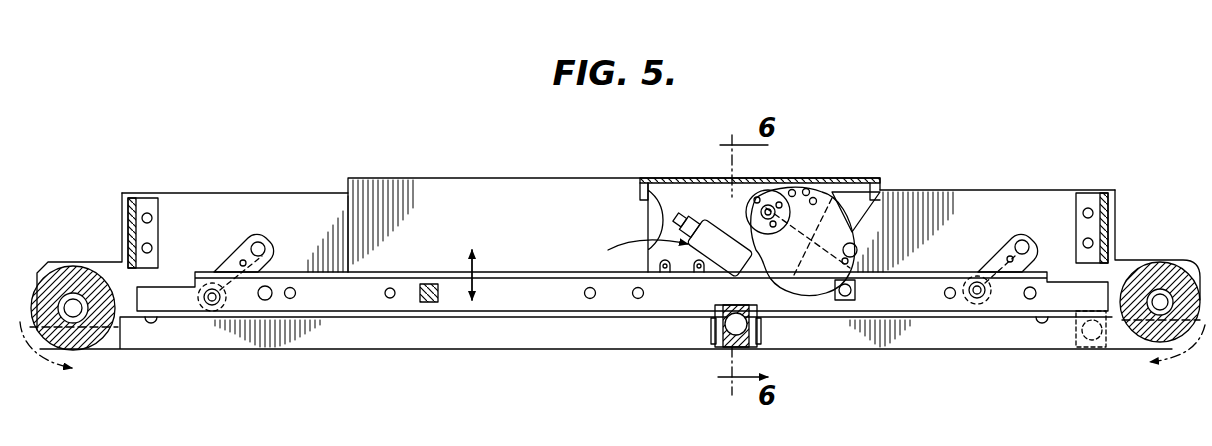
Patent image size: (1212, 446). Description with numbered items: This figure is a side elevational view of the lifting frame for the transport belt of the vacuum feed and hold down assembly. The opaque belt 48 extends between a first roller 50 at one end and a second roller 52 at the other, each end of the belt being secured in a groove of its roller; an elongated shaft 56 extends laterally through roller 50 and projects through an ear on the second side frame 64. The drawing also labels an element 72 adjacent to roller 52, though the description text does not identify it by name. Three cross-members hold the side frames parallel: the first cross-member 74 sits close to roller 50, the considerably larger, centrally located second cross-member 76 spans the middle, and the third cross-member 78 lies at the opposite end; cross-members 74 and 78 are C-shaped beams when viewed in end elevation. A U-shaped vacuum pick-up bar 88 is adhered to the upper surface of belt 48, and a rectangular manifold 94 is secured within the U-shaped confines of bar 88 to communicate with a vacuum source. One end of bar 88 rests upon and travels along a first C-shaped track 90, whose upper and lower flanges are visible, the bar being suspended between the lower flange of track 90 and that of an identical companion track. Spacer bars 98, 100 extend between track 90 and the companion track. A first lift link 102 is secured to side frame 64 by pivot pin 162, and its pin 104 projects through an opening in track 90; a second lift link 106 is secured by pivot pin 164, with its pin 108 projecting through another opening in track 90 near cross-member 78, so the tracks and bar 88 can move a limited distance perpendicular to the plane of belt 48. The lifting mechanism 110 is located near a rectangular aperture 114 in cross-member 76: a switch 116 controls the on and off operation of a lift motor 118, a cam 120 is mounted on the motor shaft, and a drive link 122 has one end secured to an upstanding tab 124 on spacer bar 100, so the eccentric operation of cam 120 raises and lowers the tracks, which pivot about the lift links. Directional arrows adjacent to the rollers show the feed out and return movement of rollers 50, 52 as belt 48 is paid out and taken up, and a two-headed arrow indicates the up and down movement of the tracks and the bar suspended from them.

The belt 48 is at (376, 345).
The first roller 50 is at (1163, 272).
The second roller 52 is at (88, 336).
The elongated shaft 56 is at (1147, 332).
The second side frame 64 is at (546, 219).
The roller 72 is at (73, 300).
The first cross-member 74 is at (1110, 218).
The second cross-member 76 is at (664, 178).
The third cross-member 78 is at (130, 230).
The vacuum pick-up bar 88 is at (760, 340).
The first C-shaped track 90 is at (797, 300).
The rectangular manifold 94 is at (722, 332).
The spacer bar 98 is at (428, 284).
The spacer bar 100 is at (857, 293).
The first lift link 102 is at (990, 262).
The pin 104 is at (978, 300).
The second lift link 106 is at (228, 268).
The pin 108 is at (212, 305).
The lifting mechanism 110 is at (629, 249).
The rectangular aperture 114 is at (648, 218).
The switch 116 is at (704, 228).
The lift motor 118 is at (802, 282).
The cam 120 is at (775, 190).
The drive link 122 is at (838, 180).
The upstanding tab 124 is at (860, 253).
The pivot pin 162 is at (1026, 240).
The pivot pin 164 is at (262, 246).